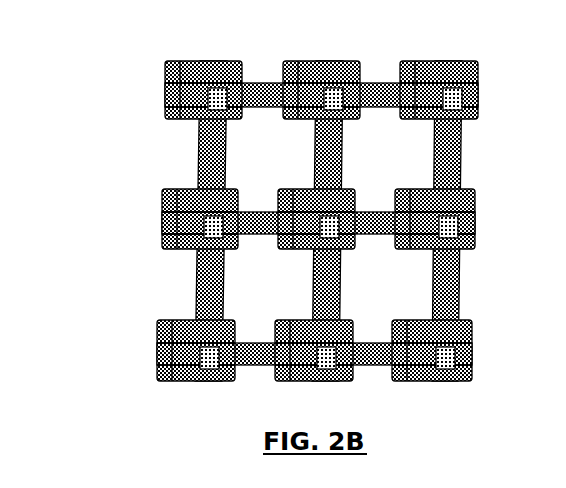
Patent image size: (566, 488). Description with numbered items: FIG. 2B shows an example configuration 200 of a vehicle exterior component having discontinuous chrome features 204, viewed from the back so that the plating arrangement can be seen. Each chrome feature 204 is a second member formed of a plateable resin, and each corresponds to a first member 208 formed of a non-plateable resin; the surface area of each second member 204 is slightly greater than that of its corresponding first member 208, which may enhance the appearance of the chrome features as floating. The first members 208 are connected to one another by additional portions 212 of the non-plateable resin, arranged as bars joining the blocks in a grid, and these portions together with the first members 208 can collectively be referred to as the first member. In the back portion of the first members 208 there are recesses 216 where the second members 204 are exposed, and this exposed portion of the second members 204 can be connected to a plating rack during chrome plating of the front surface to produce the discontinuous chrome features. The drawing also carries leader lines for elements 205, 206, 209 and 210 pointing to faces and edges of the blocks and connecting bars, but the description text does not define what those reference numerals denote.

The example configuration 200 is at (108, 60).
The chrome feature 204 is at (394, 59).
The node side face 205 is at (165, 80).
The node body 206 is at (182, 120).
The first member 208 is at (185, 261).
The top of node 209 is at (425, 61).
The horizontal interconnect bar 210 is at (243, 73).
The additional portions 212 is at (468, 300).
The recesses 216 is at (465, 103).